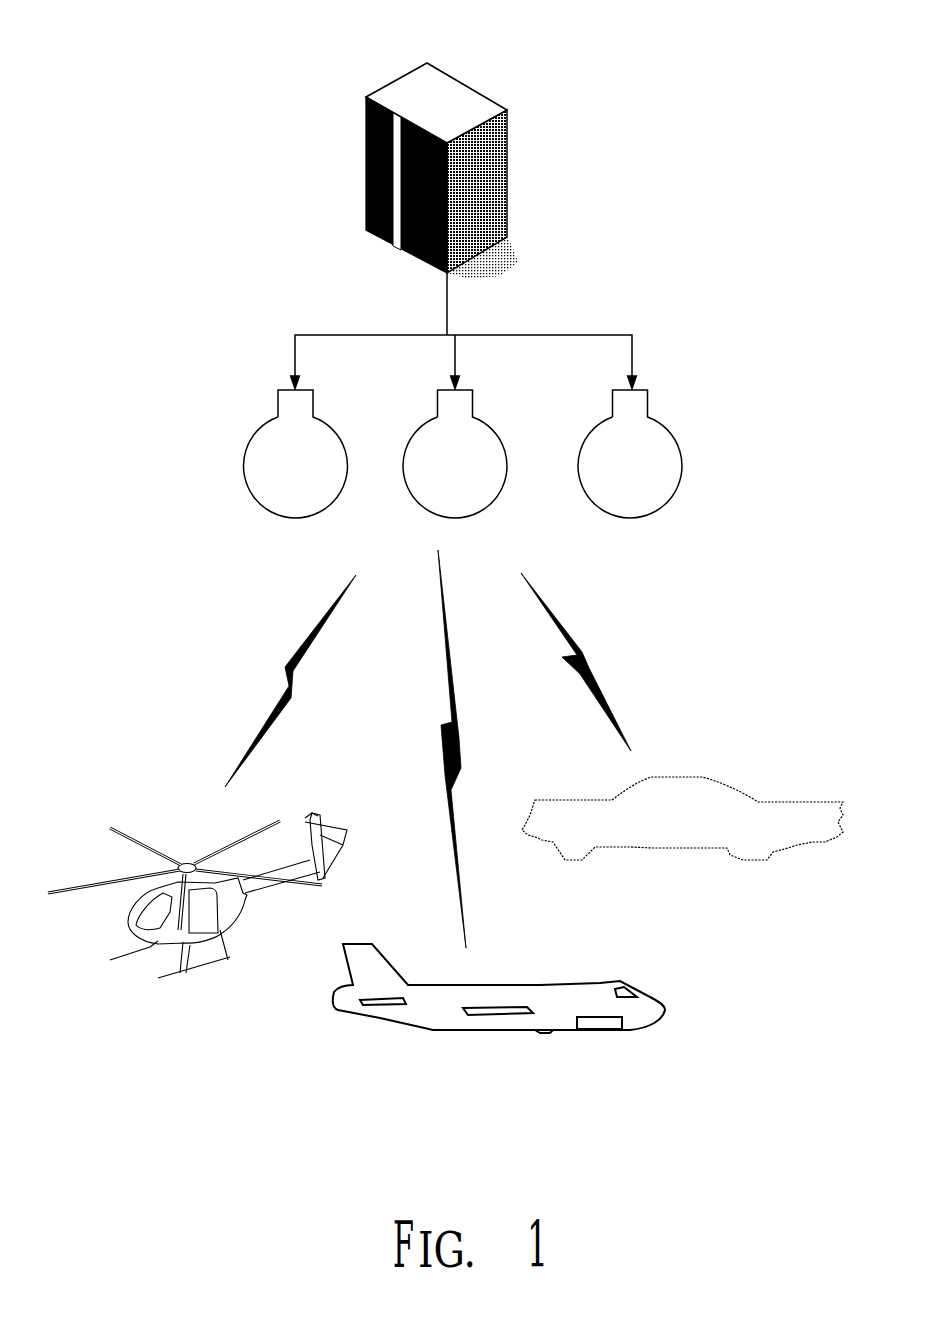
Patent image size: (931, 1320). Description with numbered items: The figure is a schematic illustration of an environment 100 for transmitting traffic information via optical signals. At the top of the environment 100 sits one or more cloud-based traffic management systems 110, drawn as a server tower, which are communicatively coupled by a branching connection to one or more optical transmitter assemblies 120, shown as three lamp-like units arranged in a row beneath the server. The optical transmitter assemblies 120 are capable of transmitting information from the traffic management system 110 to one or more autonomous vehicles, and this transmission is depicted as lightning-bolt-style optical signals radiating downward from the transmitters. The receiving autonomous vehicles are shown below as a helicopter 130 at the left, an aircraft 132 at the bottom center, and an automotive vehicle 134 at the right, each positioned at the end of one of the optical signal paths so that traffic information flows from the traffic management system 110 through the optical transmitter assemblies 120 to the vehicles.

The environment 100 is at (80, 26).
The cloud-based traffic management system 110 is at (427, 63).
The optical transmitter assembly 120 is at (238, 377).
The helicopter 130 is at (149, 827).
The aircraft 132 is at (438, 1031).
The automotive vehicle 134 is at (728, 800).